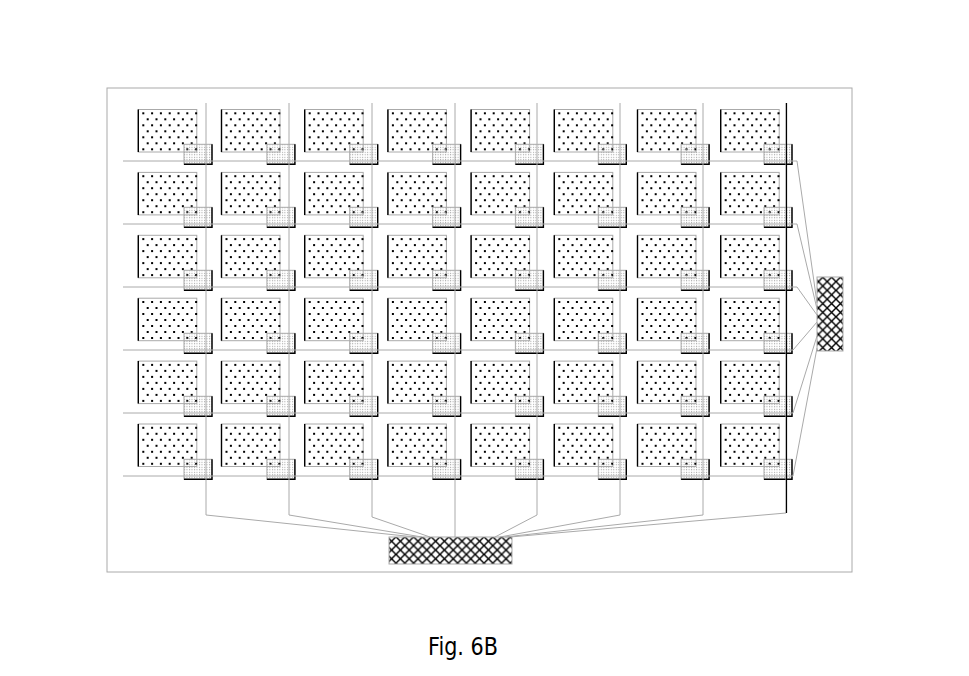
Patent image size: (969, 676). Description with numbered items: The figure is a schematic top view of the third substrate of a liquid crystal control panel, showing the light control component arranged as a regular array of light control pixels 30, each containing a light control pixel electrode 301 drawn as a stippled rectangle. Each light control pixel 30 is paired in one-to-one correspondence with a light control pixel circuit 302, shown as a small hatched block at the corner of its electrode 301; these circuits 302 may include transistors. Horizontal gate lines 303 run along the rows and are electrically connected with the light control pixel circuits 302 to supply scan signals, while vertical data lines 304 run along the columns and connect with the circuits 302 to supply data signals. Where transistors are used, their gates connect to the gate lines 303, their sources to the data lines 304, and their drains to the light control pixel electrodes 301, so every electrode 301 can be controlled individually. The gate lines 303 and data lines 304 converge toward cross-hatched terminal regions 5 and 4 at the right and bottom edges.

The light control pixel 30 is at (458, 250).
The light control pixel electrode 301 is at (232, 122).
The light control pixel circuit 302 is at (288, 146).
The gate line 303 is at (135, 222).
The data line 304 is at (785, 112).
The first bonding pad 4 is at (487, 564).
The second bonding pad 5 is at (844, 296).